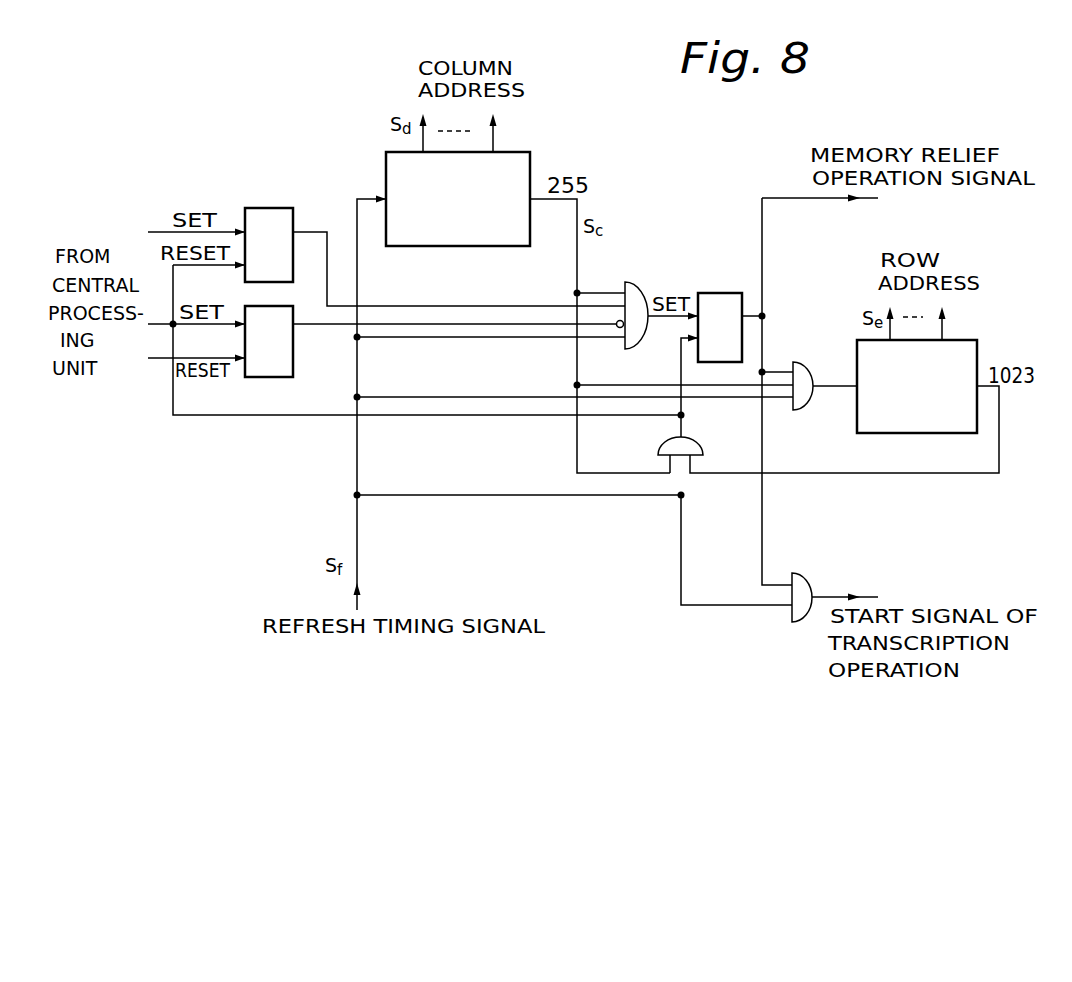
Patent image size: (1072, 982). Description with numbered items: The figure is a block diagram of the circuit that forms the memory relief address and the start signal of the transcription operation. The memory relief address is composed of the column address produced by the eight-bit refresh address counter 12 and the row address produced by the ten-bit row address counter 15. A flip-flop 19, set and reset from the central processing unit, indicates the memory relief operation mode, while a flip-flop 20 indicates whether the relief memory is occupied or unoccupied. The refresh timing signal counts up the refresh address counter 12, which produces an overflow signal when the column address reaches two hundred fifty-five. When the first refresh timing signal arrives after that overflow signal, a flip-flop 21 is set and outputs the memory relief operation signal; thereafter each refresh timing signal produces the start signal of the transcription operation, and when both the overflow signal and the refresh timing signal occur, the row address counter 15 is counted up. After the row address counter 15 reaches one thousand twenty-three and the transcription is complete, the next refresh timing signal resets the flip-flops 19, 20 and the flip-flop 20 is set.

The refresh address counter 12 is at (524, 152).
The row address counter 15 is at (965, 340).
The flip-flop 19 is at (292, 196).
The flip-flop 20 is at (300, 294).
The flip-flop 21 is at (724, 293).